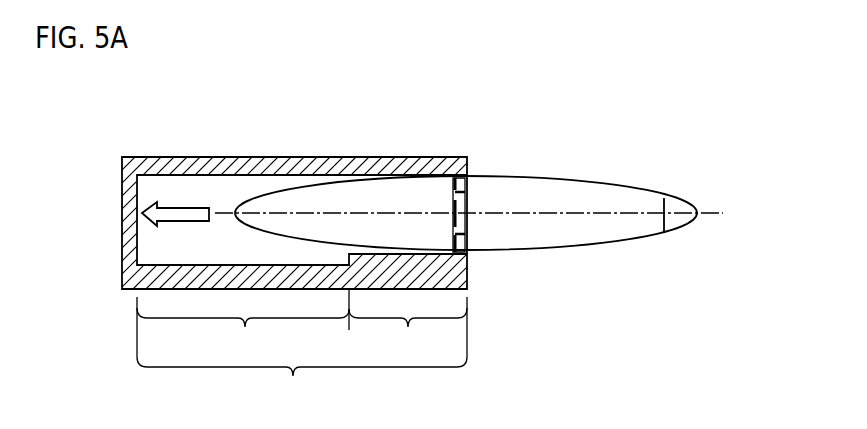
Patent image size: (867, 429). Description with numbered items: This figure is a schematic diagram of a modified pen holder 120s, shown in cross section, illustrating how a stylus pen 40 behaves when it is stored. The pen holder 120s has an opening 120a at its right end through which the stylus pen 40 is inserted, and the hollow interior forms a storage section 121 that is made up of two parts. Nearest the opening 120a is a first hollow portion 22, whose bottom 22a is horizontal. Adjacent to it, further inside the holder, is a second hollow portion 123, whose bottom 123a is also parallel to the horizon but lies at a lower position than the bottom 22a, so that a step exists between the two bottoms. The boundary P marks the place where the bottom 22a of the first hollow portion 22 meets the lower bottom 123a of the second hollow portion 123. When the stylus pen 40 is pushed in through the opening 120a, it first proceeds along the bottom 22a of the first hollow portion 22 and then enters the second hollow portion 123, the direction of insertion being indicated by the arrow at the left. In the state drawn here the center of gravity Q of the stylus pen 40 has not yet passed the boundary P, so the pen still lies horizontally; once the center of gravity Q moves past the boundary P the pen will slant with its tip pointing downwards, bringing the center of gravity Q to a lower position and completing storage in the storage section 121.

The pen holder 120s is at (244, 155).
The bottom of the first hollow portion 22a is at (379, 253).
The opening 120a is at (470, 177).
The stylus pen 40 is at (597, 183).
The bottom of the second hollow portion 123a is at (178, 265).
The second hollow portion 123 is at (243, 327).
The first hollow portion 22 is at (408, 328).
The bore 121 is at (302, 381).
The boundary P is at (348, 324).
The center of gravity Q is at (462, 217).